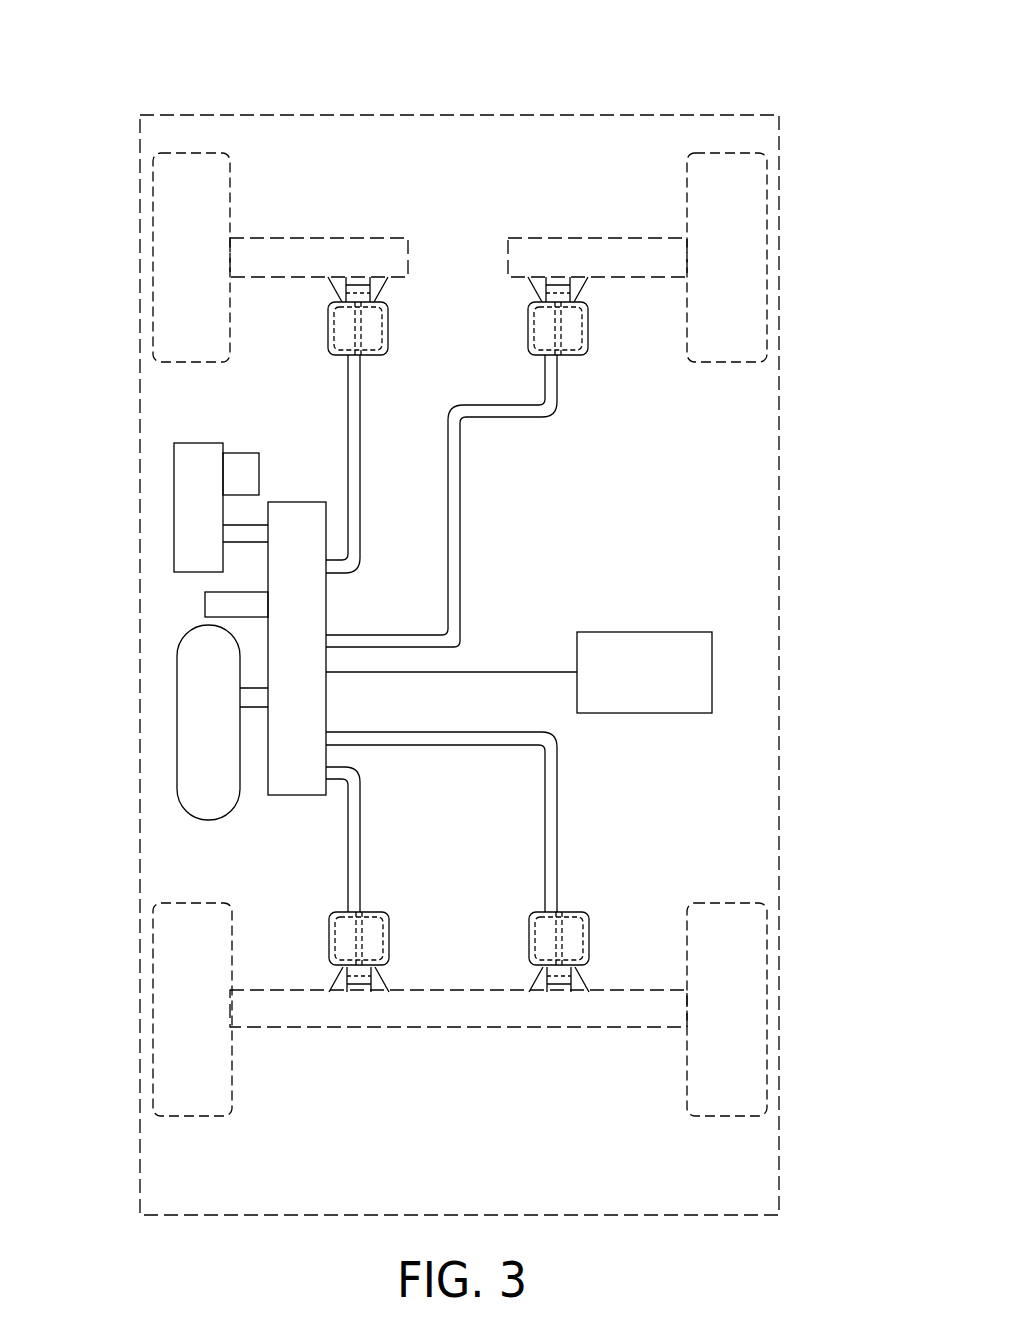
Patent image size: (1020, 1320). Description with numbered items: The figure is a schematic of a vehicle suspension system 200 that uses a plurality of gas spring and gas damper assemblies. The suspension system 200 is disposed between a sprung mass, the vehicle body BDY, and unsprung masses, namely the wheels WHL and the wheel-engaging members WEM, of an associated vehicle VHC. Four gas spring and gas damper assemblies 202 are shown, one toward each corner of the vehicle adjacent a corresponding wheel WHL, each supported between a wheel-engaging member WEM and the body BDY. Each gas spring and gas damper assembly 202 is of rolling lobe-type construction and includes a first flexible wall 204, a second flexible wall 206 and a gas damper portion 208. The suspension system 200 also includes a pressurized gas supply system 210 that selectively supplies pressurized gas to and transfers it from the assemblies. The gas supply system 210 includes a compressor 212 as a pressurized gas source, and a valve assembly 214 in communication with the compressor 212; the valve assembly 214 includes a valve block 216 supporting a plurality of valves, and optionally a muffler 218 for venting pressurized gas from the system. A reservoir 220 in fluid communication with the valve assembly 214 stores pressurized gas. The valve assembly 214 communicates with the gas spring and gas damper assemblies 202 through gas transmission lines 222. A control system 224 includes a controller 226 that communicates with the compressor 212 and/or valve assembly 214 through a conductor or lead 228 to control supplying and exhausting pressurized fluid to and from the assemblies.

The vehicle body BDY is at (645, 114).
The vehicle VHC is at (748, 94).
The wheel WHL is at (166, 215).
The wheel-engaging member WEM is at (314, 237).
The suspension system 200 is at (708, 434).
The gas spring and gas damper assembly 202 is at (454, 639).
The first flexible wall 204 is at (336, 341).
The second flexible wall 206 is at (328, 323).
The gas damper portion 208 is at (380, 294).
The pressurized gas supply system 210 is at (232, 631).
The compressor 212 is at (185, 485).
The valve assembly 214 is at (312, 607).
The valve block 216 is at (328, 708).
The muffler 218 is at (210, 603).
The reservoir 220 is at (190, 753).
The gas transmission line 222 is at (361, 479).
The control system 224 is at (645, 624).
The controller 226 is at (677, 612).
The conductor or lead 228 is at (477, 672).